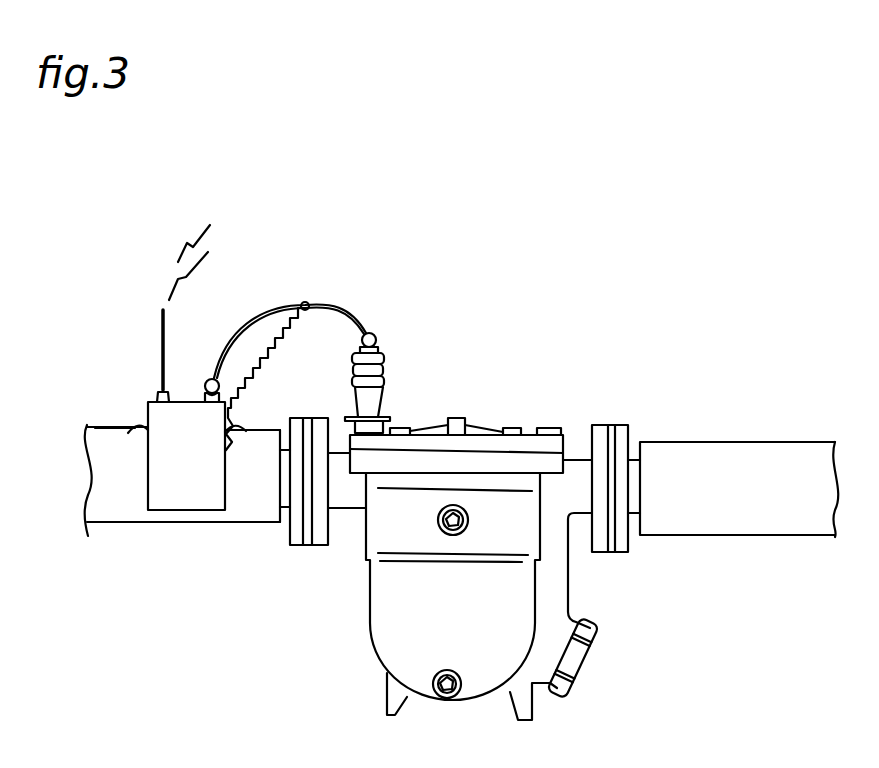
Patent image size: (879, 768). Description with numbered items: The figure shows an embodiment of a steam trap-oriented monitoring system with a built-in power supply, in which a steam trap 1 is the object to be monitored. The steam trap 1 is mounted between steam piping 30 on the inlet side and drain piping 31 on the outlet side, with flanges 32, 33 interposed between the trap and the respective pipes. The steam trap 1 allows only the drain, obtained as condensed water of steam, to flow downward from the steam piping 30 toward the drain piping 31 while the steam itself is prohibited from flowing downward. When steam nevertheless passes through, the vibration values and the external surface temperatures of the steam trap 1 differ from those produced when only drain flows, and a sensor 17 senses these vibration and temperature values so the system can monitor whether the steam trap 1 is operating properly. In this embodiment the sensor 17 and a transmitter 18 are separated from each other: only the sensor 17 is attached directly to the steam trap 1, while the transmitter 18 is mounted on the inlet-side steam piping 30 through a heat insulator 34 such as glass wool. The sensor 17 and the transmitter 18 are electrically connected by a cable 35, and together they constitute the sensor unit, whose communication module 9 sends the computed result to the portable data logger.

The steam trap 1 is at (523, 450).
The communication module 9 is at (128, 347).
The sensor 17 is at (398, 357).
The transmitter 18 is at (178, 495).
The steam piping 30 is at (110, 505).
The drain piping 31 is at (700, 458).
The flange 32 is at (318, 540).
The flange 33 is at (598, 545).
The heat insulator 34 is at (108, 442).
The cable 35 is at (271, 309).